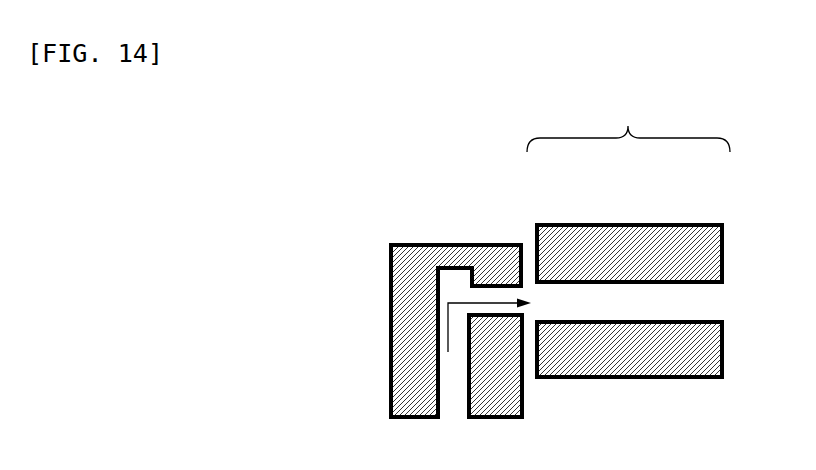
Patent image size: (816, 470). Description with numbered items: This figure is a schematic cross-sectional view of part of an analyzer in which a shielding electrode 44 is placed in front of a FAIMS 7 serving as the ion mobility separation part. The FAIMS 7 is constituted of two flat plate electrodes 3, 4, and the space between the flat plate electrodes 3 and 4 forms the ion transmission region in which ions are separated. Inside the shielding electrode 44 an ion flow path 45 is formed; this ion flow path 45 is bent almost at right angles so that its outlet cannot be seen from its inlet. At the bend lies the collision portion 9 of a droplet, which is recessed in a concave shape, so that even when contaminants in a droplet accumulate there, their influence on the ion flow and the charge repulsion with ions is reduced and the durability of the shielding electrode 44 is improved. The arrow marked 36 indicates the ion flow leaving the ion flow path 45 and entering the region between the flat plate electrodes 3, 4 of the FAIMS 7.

The flat plate electrode 3 is at (623, 224).
The flat plate electrode 4 is at (632, 378).
The FAIMS 7 is at (628, 128).
The collision portion 9 is at (455, 277).
The flow path 36 is at (531, 307).
The shielding electrode 44 is at (418, 245).
The ion flow path 45 is at (448, 381).